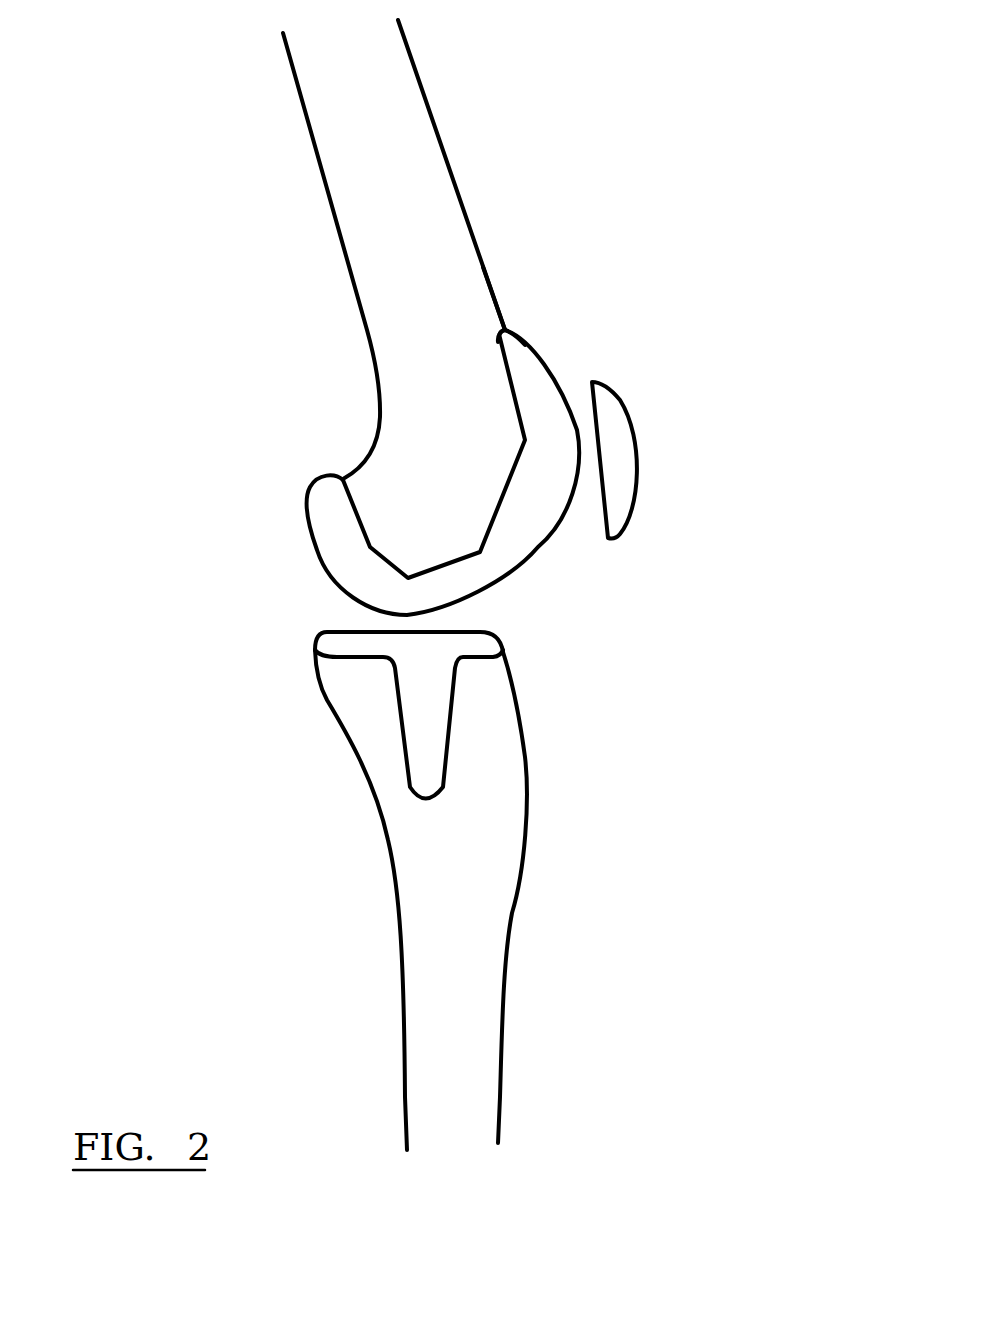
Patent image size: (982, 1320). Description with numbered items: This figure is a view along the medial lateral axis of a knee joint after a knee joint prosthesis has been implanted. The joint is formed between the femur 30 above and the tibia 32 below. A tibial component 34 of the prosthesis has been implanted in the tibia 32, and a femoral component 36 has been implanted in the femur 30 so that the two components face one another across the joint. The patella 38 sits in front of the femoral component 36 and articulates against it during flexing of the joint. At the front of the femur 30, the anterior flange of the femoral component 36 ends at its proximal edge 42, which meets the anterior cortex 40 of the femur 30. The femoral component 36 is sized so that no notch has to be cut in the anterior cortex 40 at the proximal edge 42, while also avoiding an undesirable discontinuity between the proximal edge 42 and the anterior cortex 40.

The femur 30 is at (393, 150).
The tibia 32 is at (448, 1058).
The tibial component 34 is at (343, 643).
The femoral component 36 is at (517, 540).
The patella 38 is at (622, 457).
The anterior cortex 40 is at (483, 267).
The proximal edge 42 is at (505, 330).